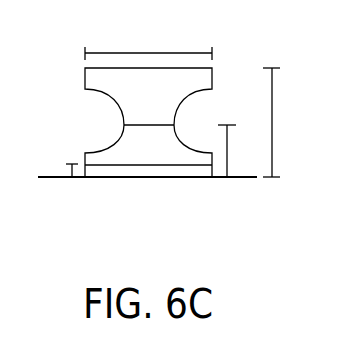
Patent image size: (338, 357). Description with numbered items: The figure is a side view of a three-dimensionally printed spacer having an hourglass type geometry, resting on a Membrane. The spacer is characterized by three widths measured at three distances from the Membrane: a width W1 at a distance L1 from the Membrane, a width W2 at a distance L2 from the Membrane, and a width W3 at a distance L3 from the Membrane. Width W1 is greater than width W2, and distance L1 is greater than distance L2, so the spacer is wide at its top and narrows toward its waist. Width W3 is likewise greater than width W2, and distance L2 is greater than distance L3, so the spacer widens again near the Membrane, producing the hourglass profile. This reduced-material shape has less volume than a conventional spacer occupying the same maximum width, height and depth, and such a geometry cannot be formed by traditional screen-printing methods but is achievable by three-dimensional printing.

The width W1 is at (148, 34).
The width W2 is at (148, 102).
The width W3 is at (149, 148).
The distance L1 is at (279, 122).
The distance L2 is at (237, 150).
The distance L3 is at (60, 159).
The membrane Membrane is at (127, 200).